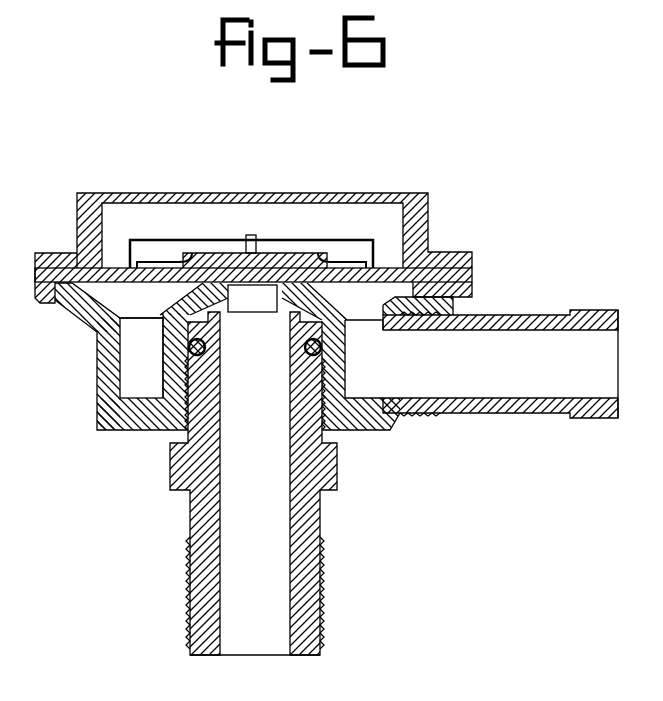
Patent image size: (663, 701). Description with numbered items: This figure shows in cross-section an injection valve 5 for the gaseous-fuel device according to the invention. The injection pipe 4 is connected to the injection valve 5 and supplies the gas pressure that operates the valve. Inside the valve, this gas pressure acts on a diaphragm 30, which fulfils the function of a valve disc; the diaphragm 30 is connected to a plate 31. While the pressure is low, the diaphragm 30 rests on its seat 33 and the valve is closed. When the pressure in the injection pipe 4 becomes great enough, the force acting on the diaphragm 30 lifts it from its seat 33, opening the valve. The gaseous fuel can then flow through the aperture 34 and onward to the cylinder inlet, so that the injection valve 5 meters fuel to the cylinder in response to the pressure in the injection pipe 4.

The injection valve 5 is at (422, 186).
The diaphragm 30 is at (388, 260).
The plate 31 is at (371, 266).
The seat 33 is at (167, 327).
The injection pipe 4 is at (530, 350).
The aperture 34 is at (265, 578).